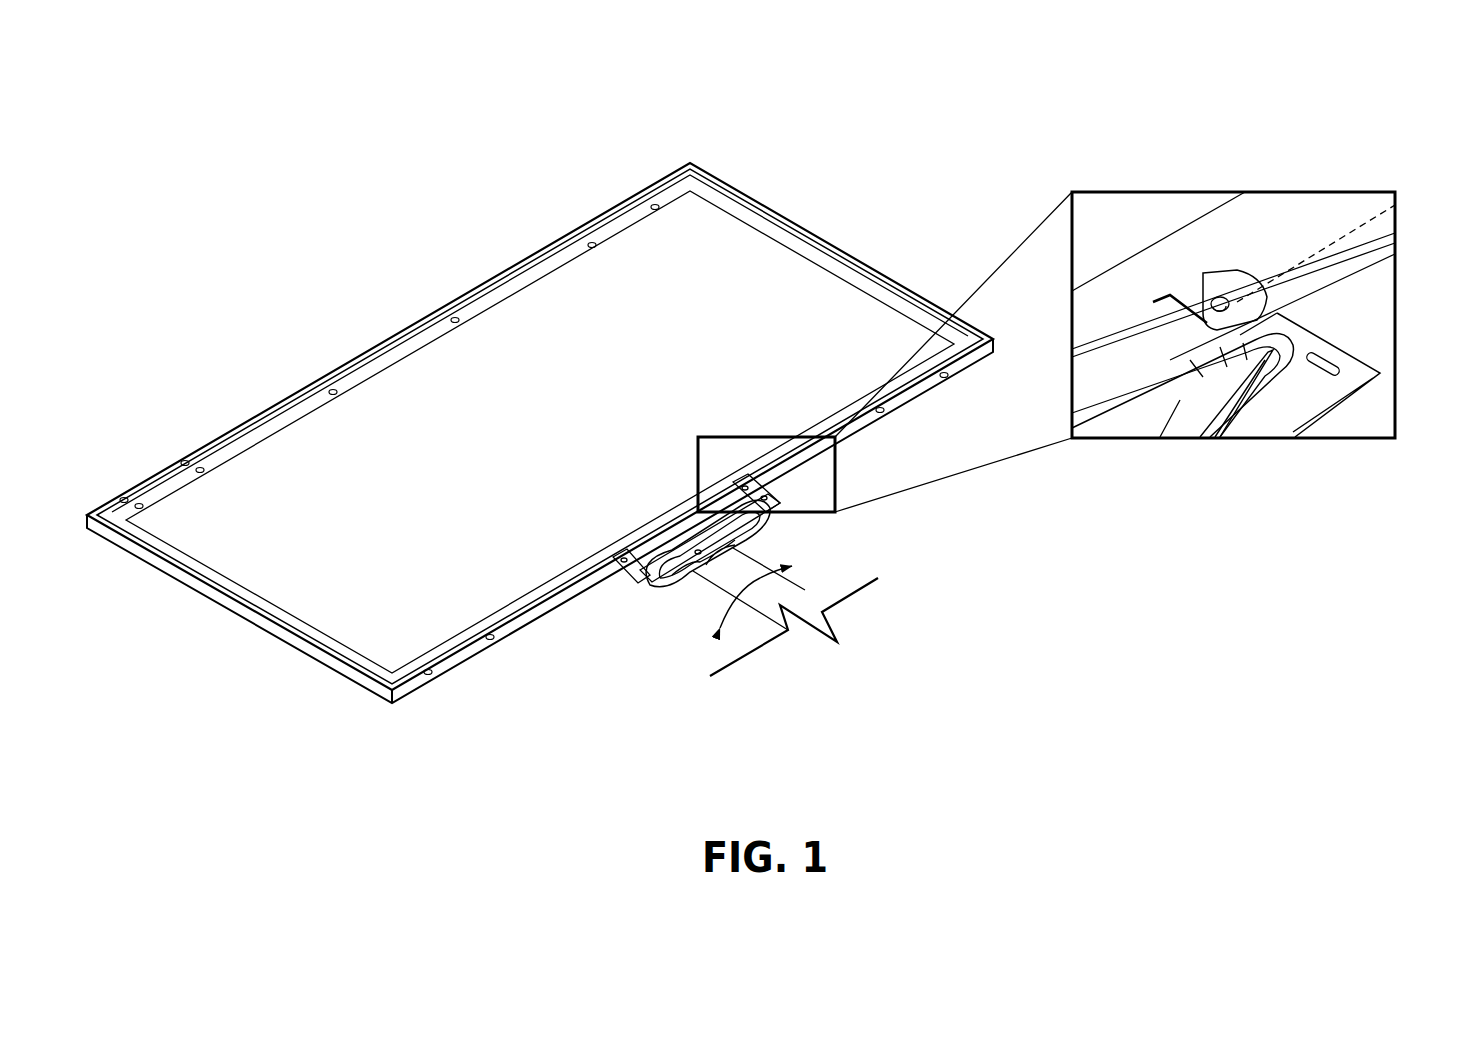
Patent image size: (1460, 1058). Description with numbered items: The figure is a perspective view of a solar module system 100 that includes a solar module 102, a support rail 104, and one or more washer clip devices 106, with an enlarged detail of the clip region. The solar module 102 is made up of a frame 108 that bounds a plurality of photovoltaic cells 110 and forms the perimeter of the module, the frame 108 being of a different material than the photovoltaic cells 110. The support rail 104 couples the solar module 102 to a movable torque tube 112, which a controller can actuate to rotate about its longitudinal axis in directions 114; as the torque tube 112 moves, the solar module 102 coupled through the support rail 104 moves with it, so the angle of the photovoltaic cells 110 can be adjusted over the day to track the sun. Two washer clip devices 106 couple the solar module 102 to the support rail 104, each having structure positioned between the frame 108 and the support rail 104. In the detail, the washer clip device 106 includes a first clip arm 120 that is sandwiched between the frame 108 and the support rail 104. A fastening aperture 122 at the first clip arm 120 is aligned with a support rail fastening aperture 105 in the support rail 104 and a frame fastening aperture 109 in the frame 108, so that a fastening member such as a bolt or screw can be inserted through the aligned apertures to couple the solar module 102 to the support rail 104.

The solar module system 100 is at (568, 725).
The solar module 102 is at (511, 302).
The support rail 104 is at (655, 594).
The support rail fastening aperture 105 is at (1188, 317).
The washer clip device 106 is at (744, 476).
The frame 108 is at (779, 203).
The frame fastening aperture 109 is at (1198, 288).
The photovoltaic cells 110 is at (400, 397).
The torque tube 112 is at (788, 592).
The directions 114 is at (750, 610).
The first clip arm 120 is at (1396, 213).
The fastening aperture 122 is at (1217, 285).